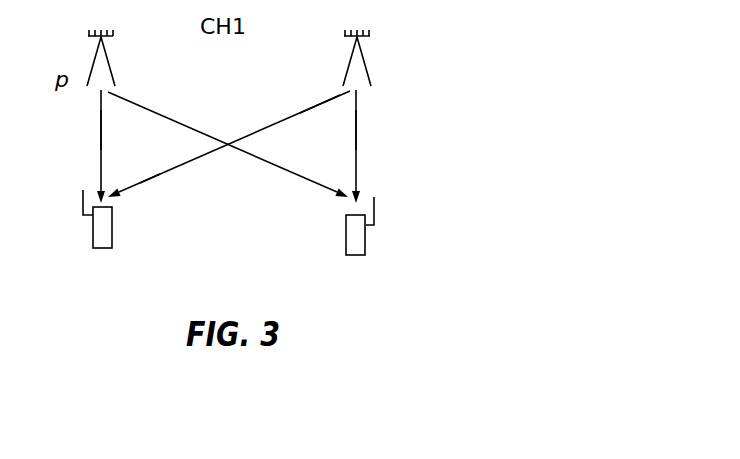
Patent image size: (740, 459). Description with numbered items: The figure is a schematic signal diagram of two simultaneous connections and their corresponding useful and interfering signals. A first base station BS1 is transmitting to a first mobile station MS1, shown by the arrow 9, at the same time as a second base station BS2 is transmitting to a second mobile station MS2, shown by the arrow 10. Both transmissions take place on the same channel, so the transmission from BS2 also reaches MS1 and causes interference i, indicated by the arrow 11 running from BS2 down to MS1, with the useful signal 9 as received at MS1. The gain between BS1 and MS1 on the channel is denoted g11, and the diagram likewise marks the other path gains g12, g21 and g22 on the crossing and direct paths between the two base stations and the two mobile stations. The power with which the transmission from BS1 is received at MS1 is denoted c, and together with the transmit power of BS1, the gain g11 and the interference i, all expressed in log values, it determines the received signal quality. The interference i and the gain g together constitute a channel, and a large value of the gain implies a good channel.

The arrow 9 is at (98, 170).
The arrow 10 is at (358, 163).
The arrow 11 is at (260, 130).
The gain g11 is at (98, 133).
The channel gain BS1 to MS2 g12 is at (283, 169).
The channel gain BS2 to MS1 g21 is at (319, 104).
The channel gain BS2 to MS2 g22 is at (358, 133).
The power c is at (76, 205).
The interference i is at (158, 187).
The base station BS1 is at (74, 55).
The base station BS2 is at (383, 55).
The mobile station MS1 is at (72, 231).
The mobile station MS2 is at (389, 231).